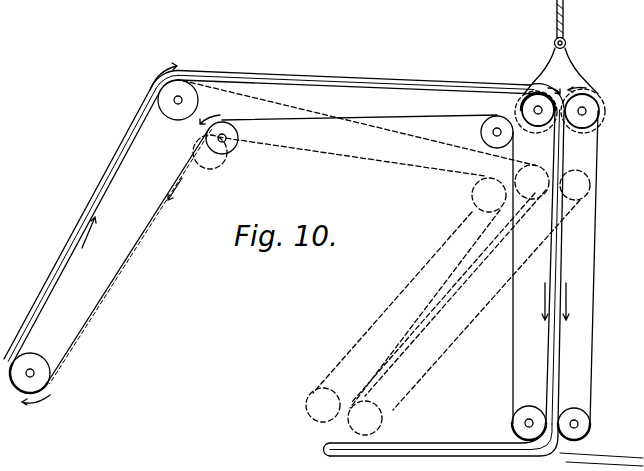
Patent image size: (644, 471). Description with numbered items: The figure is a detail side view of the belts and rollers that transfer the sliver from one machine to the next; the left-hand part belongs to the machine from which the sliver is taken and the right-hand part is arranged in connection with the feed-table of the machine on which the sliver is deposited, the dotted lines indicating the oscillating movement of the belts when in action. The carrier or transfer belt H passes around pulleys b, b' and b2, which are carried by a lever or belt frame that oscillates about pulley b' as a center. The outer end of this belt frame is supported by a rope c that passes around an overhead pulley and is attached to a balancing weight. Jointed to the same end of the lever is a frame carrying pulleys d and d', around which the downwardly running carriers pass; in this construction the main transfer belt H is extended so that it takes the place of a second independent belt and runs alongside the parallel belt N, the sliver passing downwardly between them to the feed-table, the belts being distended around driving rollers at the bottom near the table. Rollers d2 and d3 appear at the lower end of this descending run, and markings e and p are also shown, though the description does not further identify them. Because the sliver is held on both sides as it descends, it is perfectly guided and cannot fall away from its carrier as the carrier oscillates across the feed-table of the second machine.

The carrier or transfer belt H is at (106, 191).
The pulley b' is at (178, 100).
The pulley b is at (222, 145).
The pulley d is at (489, 132).
The pulley b2 is at (536, 113).
The pulley d' is at (583, 119).
The pulley d2 is at (511, 421).
The pulley d3 is at (591, 423).
The rope c is at (40, 384).
The belt or carrier N is at (599, 271).
The suspension rope e is at (566, 3).
The part p is at (193, 1).